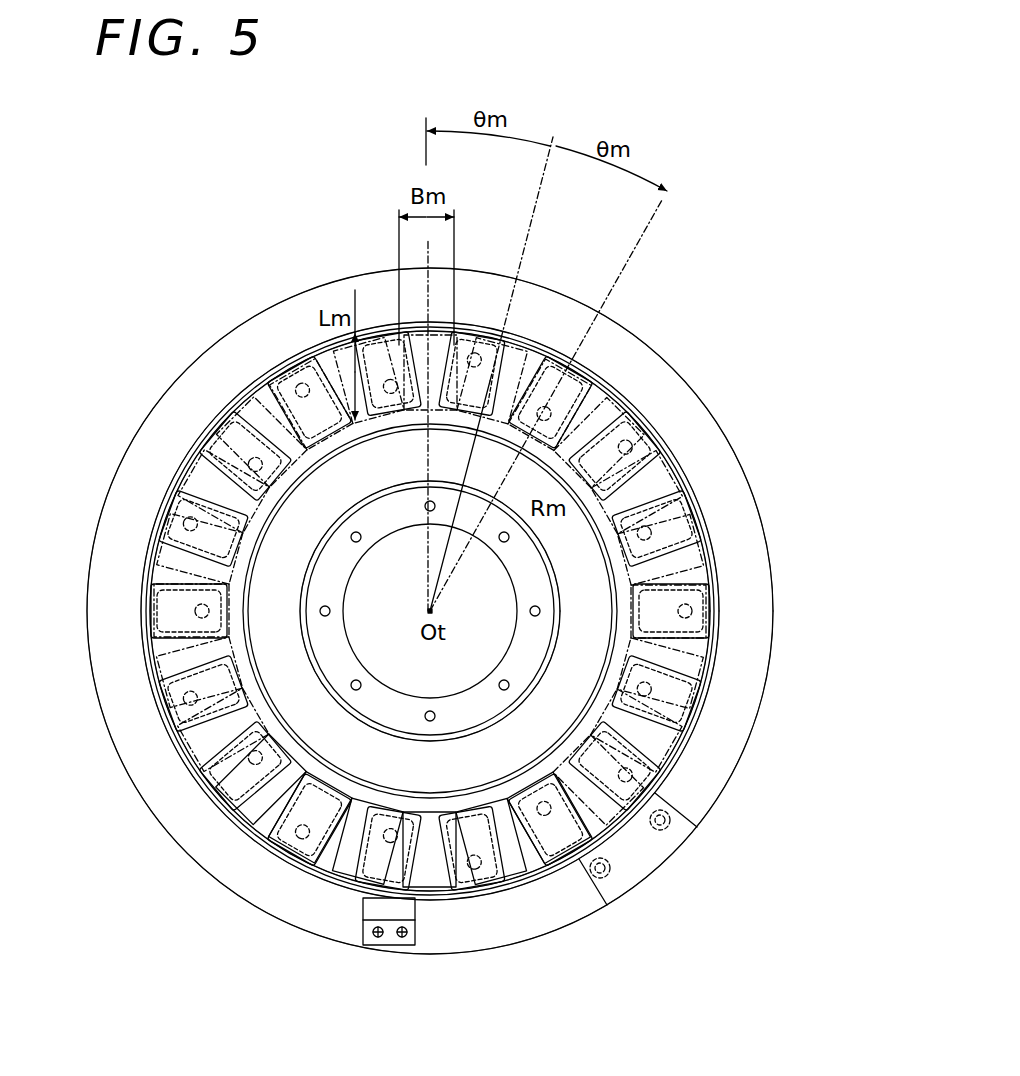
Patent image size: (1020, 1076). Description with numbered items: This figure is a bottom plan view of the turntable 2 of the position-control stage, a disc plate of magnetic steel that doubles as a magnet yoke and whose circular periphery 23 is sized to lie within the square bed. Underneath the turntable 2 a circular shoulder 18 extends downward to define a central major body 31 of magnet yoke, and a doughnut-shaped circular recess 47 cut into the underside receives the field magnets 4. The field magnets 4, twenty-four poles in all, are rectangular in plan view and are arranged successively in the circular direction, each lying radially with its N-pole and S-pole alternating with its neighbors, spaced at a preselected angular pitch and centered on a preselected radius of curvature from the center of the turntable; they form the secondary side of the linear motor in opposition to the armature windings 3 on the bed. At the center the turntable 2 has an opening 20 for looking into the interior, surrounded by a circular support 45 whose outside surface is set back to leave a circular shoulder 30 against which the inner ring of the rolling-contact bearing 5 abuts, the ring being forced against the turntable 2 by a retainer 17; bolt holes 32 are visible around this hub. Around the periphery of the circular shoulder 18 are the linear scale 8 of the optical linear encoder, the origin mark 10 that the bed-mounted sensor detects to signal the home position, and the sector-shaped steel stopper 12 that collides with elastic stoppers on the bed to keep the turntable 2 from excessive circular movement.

The turntable 2 is at (650, 360).
The armature windings 3 is at (140, 603).
The field magnets 4 is at (398, 345).
The rolling-contact bearing 5 is at (555, 653).
The linear scale 8 is at (185, 760).
The origin mark 10 is at (372, 910).
The steel stopper 12 is at (650, 865).
The retainer 17 is at (386, 511).
The circular shoulder 18 is at (180, 462).
The opening 20 is at (352, 558).
The circular periphery 23 is at (263, 305).
The circular shoulder 30 is at (553, 690).
The central major body 31 is at (150, 661).
The bolt holes 32 is at (428, 718).
The circular support 45 is at (340, 683).
The circular recess 47 is at (490, 880).